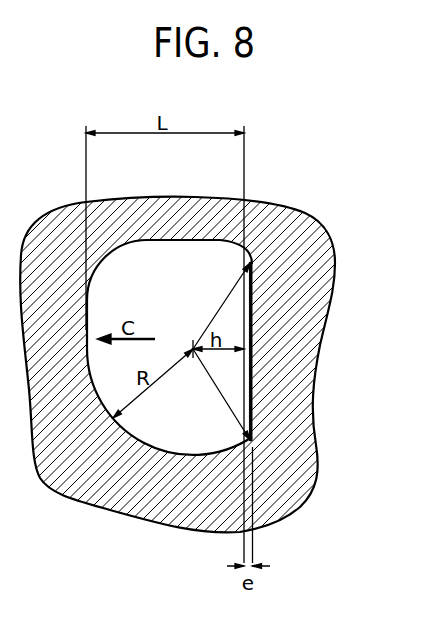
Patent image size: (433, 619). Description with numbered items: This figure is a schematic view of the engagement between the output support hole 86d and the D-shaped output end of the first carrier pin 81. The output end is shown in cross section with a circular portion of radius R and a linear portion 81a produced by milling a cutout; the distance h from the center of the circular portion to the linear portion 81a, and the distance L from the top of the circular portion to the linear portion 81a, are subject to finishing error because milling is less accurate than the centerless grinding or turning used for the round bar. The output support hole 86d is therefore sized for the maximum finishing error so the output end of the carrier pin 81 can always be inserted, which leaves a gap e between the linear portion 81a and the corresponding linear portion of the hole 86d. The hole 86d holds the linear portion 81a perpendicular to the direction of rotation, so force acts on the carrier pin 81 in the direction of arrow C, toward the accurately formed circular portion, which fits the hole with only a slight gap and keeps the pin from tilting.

The first carrier pin 81 is at (168, 264).
The linear portion 81a is at (245, 390).
The output support hole 86d is at (248, 338).